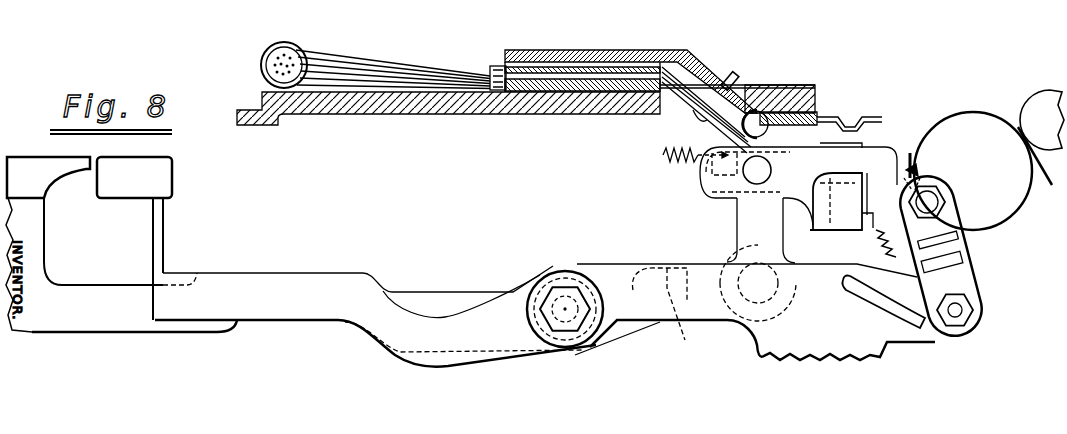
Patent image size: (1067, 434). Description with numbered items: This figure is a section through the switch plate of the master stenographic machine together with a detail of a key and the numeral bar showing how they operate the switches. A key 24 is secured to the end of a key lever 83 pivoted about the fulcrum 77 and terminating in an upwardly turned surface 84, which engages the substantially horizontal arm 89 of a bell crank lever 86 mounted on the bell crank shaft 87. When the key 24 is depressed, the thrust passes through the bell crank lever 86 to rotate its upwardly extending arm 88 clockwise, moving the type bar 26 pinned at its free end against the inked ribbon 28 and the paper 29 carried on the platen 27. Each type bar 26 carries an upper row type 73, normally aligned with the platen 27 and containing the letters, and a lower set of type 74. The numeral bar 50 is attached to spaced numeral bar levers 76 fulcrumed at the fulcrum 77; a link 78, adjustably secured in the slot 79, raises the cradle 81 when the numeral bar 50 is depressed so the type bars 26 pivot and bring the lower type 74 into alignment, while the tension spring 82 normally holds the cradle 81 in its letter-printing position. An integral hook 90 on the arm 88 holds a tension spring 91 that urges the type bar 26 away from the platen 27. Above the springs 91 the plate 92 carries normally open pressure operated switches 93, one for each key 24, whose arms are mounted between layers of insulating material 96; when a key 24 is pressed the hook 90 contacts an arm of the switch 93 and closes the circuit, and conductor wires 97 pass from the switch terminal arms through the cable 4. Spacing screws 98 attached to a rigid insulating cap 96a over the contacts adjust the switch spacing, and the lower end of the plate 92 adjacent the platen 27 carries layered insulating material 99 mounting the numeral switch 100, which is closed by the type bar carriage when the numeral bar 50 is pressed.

The cable 4 is at (297, 52).
The keys 24 is at (24, 160).
The type bars 26 is at (887, 148).
The platen 27 is at (974, 121).
The inked ribbon 28 is at (912, 152).
The paper 29 is at (944, 117).
The numeral bar 50 is at (163, 177).
The upper row type 73 is at (918, 170).
The lower set of type 74 is at (915, 191).
The numeral bar levers 76 is at (338, 272).
The fulcrum 77 is at (557, 300).
The link 78 is at (963, 265).
The slot 79 is at (887, 303).
The cradle 81 is at (828, 240).
The spring 82 is at (878, 236).
The levers 83 is at (118, 333).
The upwardly turned surfaces 84 is at (683, 300).
The bell crank lever 86 is at (765, 226).
The bell crank shaft 87 is at (758, 264).
The upwardly extending arm 88 is at (737, 200).
The substantially horizontal arm 89 is at (673, 261).
The hook 90 is at (724, 135).
The tension spring 91 is at (686, 163).
The plate 92 is at (263, 92).
The switches 93 is at (692, 120).
The insulating material 96 is at (498, 68).
The cap of insulating material 96a is at (590, 53).
The conductor wires 97 is at (380, 64).
The spacing screws 98 is at (733, 74).
The layered insulating material 99 is at (821, 128).
The numeral switch 100 is at (878, 116).